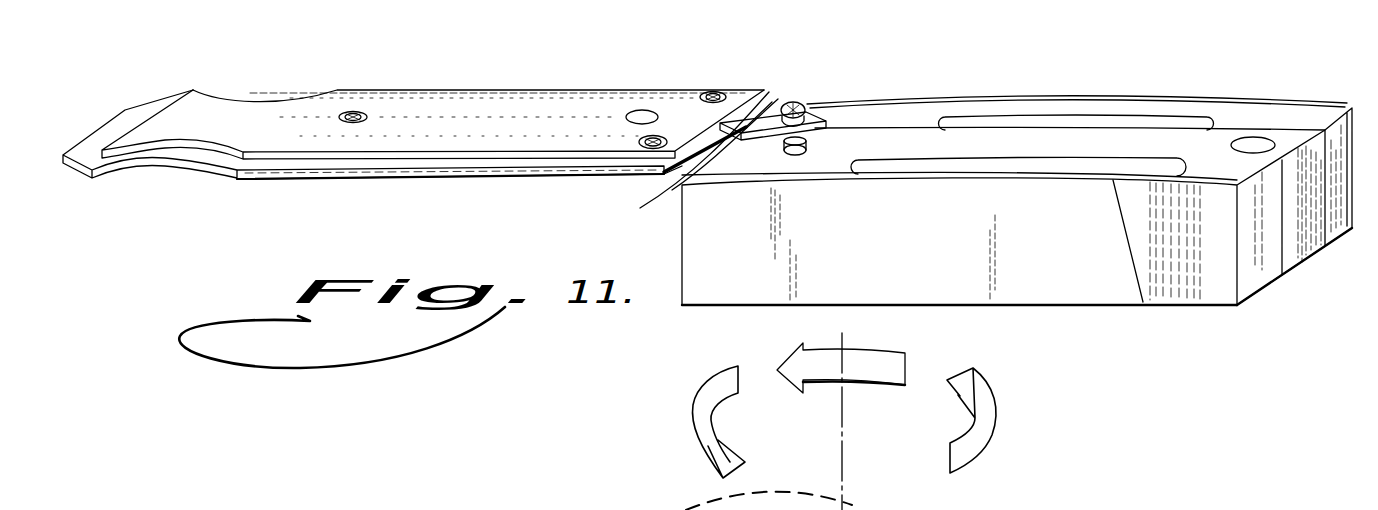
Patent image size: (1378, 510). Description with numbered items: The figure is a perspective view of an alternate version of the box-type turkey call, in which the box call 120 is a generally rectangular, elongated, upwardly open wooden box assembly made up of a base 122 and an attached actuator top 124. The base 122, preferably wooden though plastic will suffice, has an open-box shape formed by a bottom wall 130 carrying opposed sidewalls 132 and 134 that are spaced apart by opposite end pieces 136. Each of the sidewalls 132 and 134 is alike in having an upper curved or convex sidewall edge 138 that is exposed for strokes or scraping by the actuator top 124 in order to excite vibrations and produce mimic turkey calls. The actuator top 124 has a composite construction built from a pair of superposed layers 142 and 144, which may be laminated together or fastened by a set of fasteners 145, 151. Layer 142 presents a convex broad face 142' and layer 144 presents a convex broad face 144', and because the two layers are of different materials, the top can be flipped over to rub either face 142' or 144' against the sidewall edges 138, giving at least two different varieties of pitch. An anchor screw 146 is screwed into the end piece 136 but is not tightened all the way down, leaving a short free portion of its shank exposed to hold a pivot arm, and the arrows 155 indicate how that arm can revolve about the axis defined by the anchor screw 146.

The box call 120 is at (1077, 84).
The base 122 is at (1287, 250).
The actuator top 124 is at (499, 70).
The bottom wall 130 is at (1206, 322).
The sidewall 132 is at (1063, 267).
The sidewall 134 is at (1251, 84).
The end piece 136 is at (733, 164).
The sidewall edge 138 is at (1137, 97).
The layer 142 is at (433, 93).
The broad face 142' is at (497, 93).
The layer 144 is at (417, 161).
The broad face 144' is at (450, 199).
The fastener 145 is at (353, 111).
The anchor screw 146 is at (794, 102).
The fastener 151 is at (714, 92).
The arrows 155 is at (980, 398).